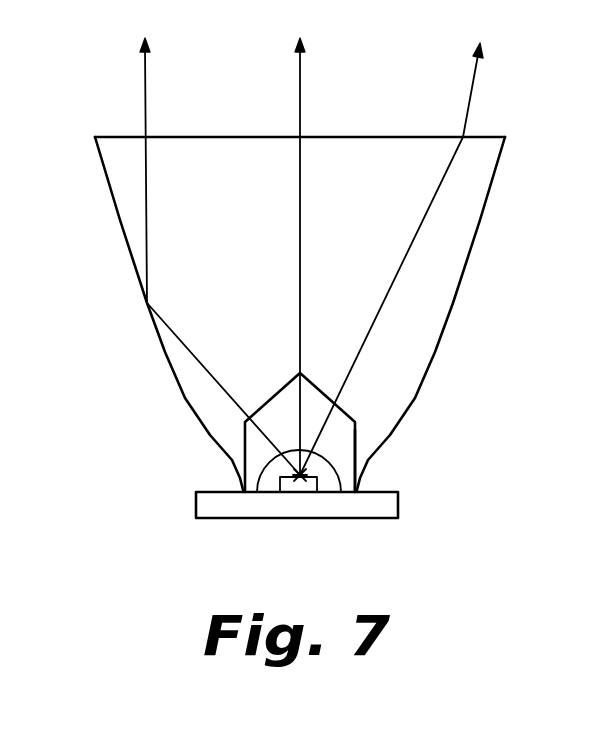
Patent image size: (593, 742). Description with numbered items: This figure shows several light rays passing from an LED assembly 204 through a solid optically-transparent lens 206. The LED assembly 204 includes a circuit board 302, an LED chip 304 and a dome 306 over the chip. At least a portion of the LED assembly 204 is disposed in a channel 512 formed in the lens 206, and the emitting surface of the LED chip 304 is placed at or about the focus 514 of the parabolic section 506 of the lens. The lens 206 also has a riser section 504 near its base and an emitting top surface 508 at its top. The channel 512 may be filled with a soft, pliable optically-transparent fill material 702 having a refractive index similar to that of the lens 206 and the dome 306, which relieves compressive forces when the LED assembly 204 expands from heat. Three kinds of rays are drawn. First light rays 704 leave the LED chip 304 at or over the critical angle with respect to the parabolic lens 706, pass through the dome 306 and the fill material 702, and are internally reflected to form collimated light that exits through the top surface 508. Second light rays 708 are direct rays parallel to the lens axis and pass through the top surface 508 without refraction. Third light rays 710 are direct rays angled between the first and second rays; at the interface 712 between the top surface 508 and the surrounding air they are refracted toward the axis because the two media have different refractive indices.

The lens 206 is at (272, 273).
The parabolic section 506 is at (120, 222).
The emitting top surface 508 is at (375, 137).
The optically-transparent fill material 702 is at (337, 447).
The LED assembly 204 is at (285, 469).
The circuit board 302 is at (365, 518).
The LED chip 304 is at (284, 493).
The dome 306 is at (260, 474).
The channel 512 is at (243, 438).
The riser section 504 is at (358, 483).
The focus 514 is at (300, 475).
The first light rays 704 is at (178, 335).
The parabolic lens 706 is at (147, 304).
The second light rays 708 is at (303, 238).
The third light rays 710 is at (372, 330).
The interface 712 is at (463, 137).